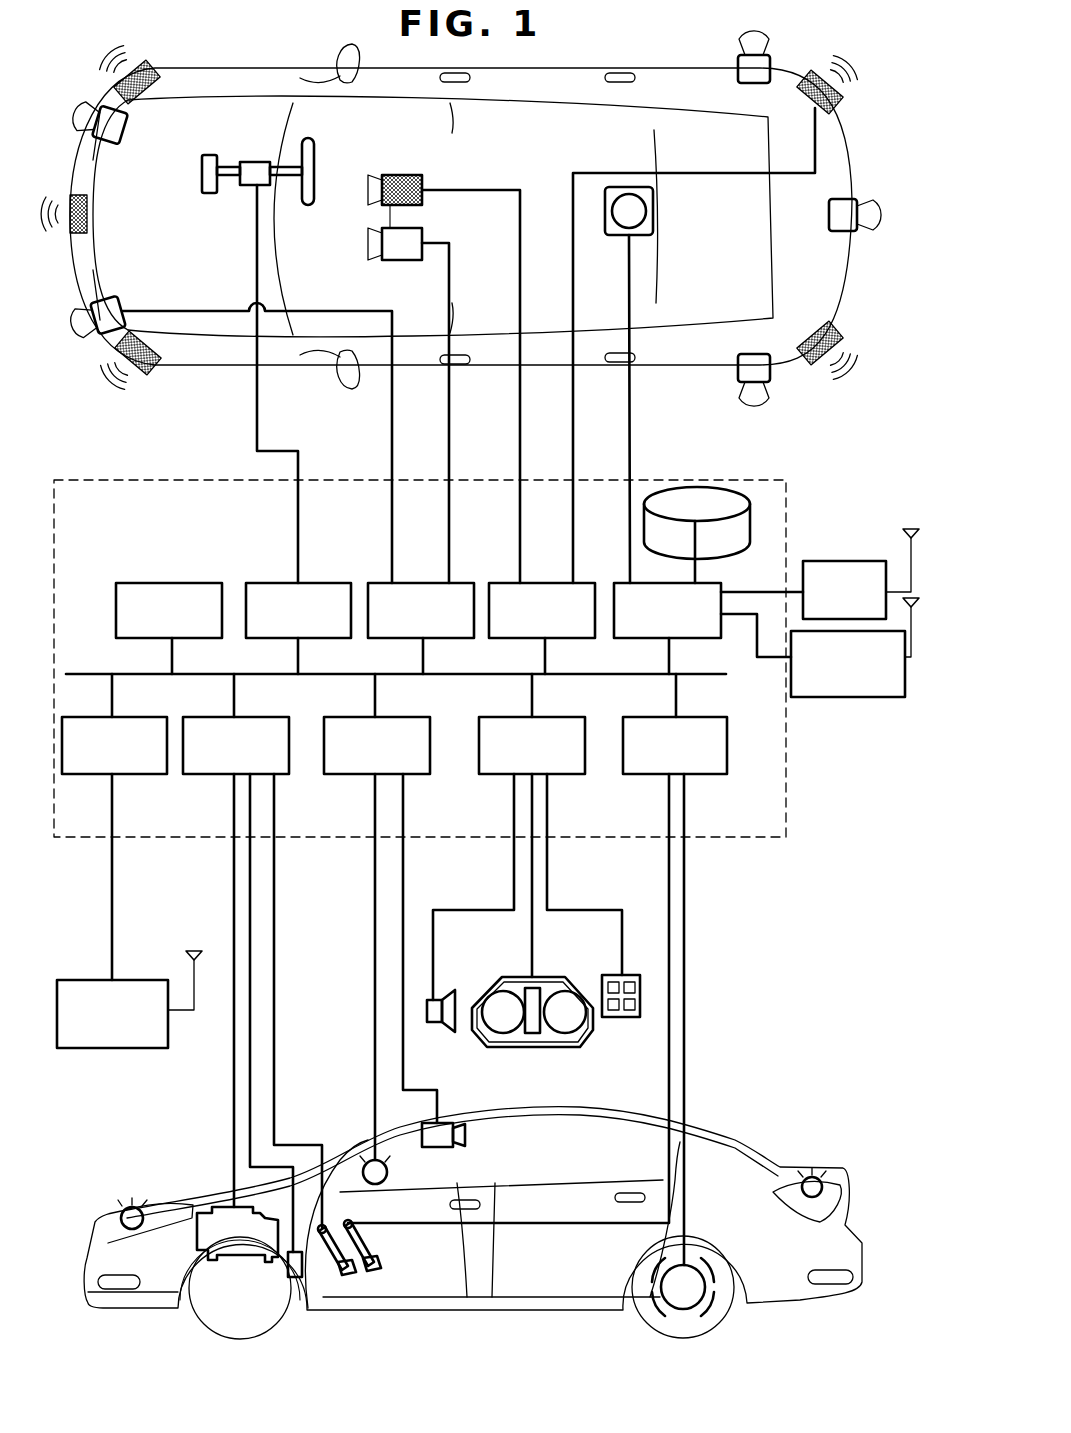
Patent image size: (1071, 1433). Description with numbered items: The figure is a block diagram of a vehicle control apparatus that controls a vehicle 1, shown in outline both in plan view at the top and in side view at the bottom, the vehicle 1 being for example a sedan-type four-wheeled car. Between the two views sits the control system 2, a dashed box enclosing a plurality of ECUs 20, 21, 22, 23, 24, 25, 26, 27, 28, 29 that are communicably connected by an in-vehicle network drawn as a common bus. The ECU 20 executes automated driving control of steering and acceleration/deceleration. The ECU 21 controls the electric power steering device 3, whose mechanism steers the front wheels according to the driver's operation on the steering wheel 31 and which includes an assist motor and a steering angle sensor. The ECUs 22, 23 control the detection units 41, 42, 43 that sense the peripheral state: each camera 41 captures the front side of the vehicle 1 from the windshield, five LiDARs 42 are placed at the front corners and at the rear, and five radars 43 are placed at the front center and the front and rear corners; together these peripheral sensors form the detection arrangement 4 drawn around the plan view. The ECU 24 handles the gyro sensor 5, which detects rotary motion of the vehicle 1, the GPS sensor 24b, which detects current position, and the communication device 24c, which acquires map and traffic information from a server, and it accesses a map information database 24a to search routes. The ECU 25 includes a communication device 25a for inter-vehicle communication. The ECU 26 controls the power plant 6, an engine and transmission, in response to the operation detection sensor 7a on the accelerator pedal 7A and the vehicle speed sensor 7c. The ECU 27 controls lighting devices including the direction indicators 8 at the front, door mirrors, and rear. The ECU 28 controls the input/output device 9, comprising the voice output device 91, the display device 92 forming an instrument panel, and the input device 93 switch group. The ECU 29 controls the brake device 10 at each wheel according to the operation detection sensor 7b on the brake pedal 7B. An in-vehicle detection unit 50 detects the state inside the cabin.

The vehicle 1 is at (864, 128).
The control system 2 is at (786, 838).
The electric power steering device 3 is at (210, 196).
The detection unit 4 is at (96, 72).
The gyro sensor 5 is at (654, 210).
The power plant 6 is at (204, 1206).
The operation detection sensor 7a is at (338, 1190).
The operation detection sensor 7b is at (356, 1222).
The accelerator pedal 7A is at (356, 1273).
The brake pedal 7B is at (381, 1263).
The vehicle speed sensor 7c is at (300, 1279).
The direction indicators 8 is at (121, 1214).
The input/output device 9 is at (536, 939).
The brake device 10 is at (688, 1312).
The ECU 20 is at (199, 583).
The ECU 21 is at (324, 583).
The ECU 22 is at (415, 583).
The ECU 23 is at (553, 583).
The ECU 24 is at (616, 583).
The map information database 24a is at (697, 487).
The GPS sensor 24b is at (846, 561).
The communication device 24c is at (845, 697).
The ECU 25 is at (140, 774).
The communication device 25a is at (110, 1048).
The ECU 26 is at (206, 774).
The ECU 27 is at (336, 774).
The ECU 28 is at (568, 774).
The ECU 29 is at (708, 774).
The steering wheel 31 is at (308, 207).
The camera 41 is at (423, 201).
The LiDAR 42 is at (122, 147).
The millimeter wave radar 43 is at (152, 70).
The in-vehicle detection unit 50 is at (467, 1298).
The voice output device 91 is at (437, 1023).
The display device 92 is at (491, 985).
The input device 93 is at (625, 1017).